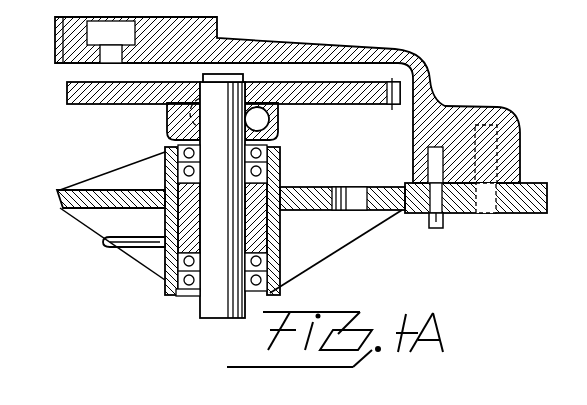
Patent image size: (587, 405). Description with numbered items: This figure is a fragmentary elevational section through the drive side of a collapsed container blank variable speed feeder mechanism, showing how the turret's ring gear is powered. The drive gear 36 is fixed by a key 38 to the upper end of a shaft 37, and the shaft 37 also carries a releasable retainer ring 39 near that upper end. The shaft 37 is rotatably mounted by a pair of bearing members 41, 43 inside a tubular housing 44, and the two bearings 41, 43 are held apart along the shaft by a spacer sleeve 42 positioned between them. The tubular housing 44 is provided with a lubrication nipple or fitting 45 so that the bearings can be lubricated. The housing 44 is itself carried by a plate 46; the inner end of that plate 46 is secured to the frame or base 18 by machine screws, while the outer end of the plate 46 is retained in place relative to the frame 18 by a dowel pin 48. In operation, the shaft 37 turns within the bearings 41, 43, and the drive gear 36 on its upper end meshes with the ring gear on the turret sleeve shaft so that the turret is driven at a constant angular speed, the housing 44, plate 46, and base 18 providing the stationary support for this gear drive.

The base 18 is at (432, 81).
The drive gear 36 is at (105, 103).
The shaft 37 is at (224, 120).
The key 38 is at (160, 130).
The releasable retainer ring 39 is at (245, 77).
The bearing member 41 is at (272, 163).
The spacer sleeve 42 is at (281, 236).
The bearing member 43 is at (290, 289).
The tubular housing 44 is at (178, 289).
The lubrication nipple 45 is at (128, 248).
The plate 46 is at (90, 208).
The dowel pin 48 is at (440, 228).